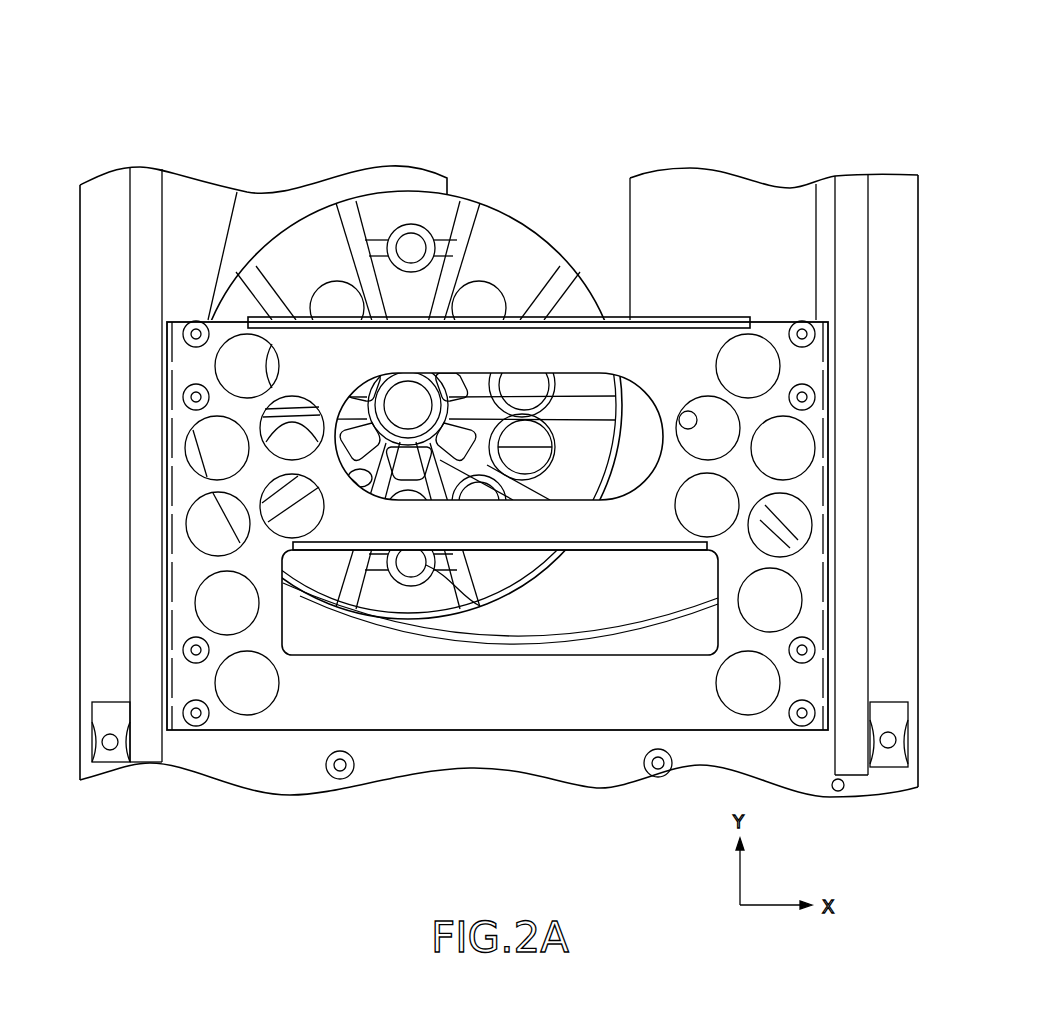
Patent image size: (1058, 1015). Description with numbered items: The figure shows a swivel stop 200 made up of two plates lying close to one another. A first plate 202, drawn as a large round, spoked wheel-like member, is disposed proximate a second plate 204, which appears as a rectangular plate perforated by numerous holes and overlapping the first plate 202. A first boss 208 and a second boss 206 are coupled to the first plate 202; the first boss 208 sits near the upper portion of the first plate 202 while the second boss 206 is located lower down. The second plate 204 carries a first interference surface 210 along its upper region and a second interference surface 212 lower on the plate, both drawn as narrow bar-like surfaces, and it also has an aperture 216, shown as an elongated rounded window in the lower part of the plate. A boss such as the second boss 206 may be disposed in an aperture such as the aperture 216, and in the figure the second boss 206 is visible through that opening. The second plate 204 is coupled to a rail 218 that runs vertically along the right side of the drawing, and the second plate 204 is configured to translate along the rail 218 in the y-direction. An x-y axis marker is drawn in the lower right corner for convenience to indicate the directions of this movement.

The swivel stop 200 is at (722, 88).
The first plate 202 is at (537, 278).
The second plate 204 is at (517, 703).
The second boss 206 is at (480, 606).
The first boss 208 is at (418, 240).
The first interference surface 210 is at (650, 325).
The second interference surface 212 is at (631, 548).
The aperture 216 is at (333, 646).
The rail 218 is at (850, 192).